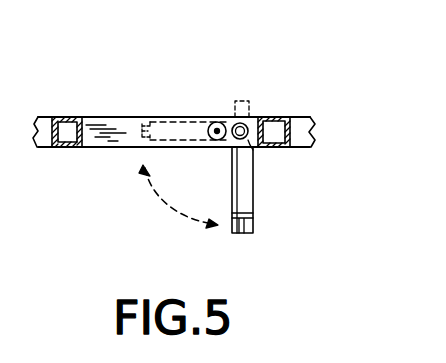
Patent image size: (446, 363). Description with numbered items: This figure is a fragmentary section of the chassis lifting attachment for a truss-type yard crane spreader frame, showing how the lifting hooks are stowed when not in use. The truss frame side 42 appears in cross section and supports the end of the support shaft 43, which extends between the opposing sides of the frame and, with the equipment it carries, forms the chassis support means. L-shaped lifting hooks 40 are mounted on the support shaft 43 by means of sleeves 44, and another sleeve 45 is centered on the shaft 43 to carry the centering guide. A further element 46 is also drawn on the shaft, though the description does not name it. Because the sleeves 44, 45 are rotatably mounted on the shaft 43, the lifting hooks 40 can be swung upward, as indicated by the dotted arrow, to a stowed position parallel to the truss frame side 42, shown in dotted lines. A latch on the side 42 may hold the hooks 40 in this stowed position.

The lifting hook 40 is at (232, 171).
The truss frame side 42 is at (102, 125).
The support shaft 43 is at (243, 124).
The sleeve 44 is at (259, 114).
The sleeve 45 is at (253, 148).
The roller 46 is at (212, 122).